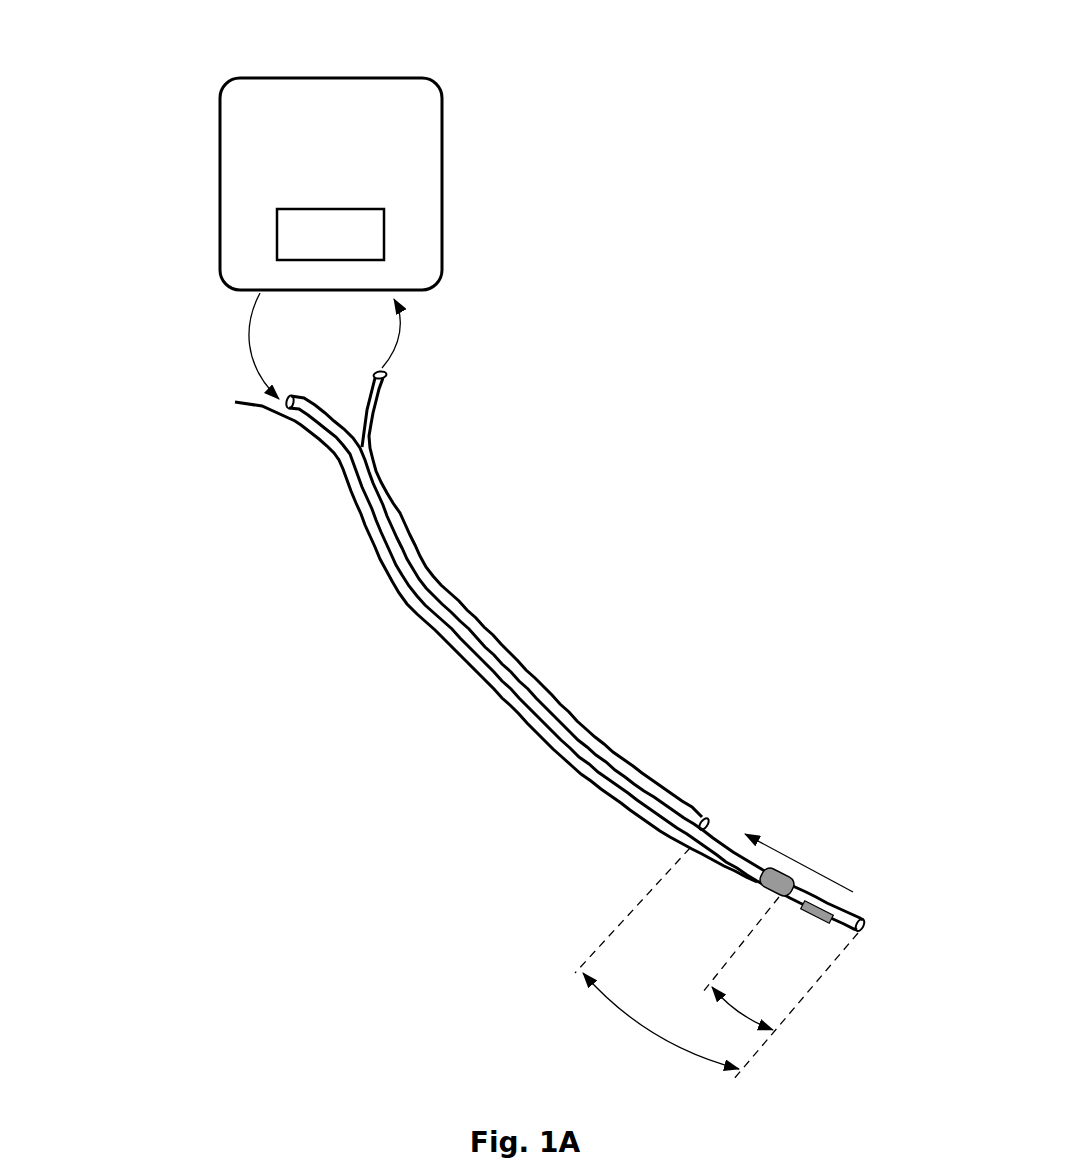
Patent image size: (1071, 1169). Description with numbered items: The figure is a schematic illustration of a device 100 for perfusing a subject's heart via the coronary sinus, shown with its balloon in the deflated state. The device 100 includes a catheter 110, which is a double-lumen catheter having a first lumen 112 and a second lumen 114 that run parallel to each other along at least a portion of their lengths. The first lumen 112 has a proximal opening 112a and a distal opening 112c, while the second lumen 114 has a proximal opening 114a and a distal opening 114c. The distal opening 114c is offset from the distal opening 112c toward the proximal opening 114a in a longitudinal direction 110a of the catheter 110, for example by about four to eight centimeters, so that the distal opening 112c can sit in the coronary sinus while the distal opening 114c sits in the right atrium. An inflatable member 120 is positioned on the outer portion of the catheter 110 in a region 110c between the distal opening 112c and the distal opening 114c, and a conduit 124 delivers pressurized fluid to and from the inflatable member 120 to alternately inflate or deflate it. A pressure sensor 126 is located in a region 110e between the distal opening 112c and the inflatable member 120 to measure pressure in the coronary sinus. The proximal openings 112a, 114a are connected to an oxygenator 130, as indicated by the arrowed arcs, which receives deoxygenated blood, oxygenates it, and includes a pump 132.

The device 100 is at (86, 31).
The catheter 110 is at (532, 641).
The longitudinal direction 110a is at (797, 862).
The region 110c is at (650, 1027).
The region 110e is at (735, 1008).
The first lumen 112 is at (444, 607).
The proximal opening 112a is at (287, 396).
The distal opening 112c is at (865, 930).
The second lumen 114 is at (582, 728).
The proximal opening 114a is at (386, 378).
The distal opening 114c is at (708, 818).
The inflatable member 120 is at (773, 888).
The conduit 124 is at (643, 818).
The pressure sensor 126 is at (817, 920).
The oxygenator 130 is at (220, 150).
The pump 132 is at (277, 233).